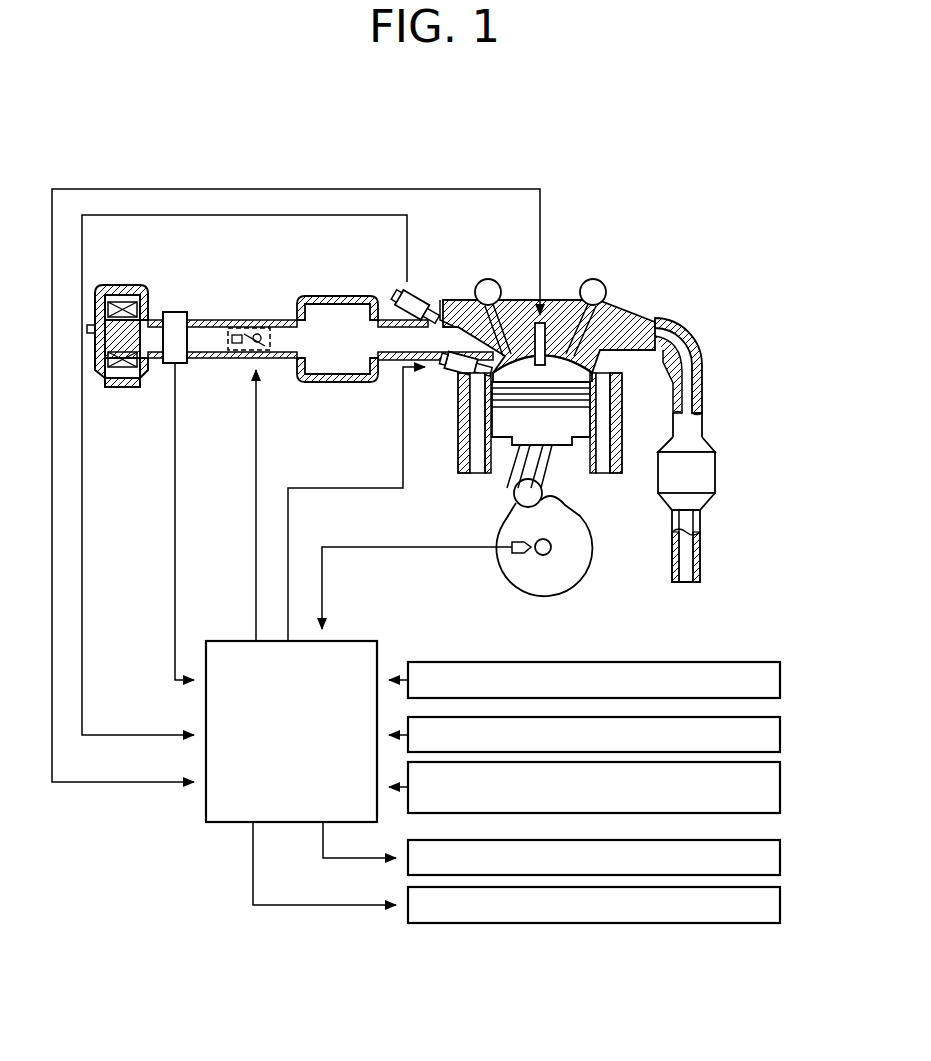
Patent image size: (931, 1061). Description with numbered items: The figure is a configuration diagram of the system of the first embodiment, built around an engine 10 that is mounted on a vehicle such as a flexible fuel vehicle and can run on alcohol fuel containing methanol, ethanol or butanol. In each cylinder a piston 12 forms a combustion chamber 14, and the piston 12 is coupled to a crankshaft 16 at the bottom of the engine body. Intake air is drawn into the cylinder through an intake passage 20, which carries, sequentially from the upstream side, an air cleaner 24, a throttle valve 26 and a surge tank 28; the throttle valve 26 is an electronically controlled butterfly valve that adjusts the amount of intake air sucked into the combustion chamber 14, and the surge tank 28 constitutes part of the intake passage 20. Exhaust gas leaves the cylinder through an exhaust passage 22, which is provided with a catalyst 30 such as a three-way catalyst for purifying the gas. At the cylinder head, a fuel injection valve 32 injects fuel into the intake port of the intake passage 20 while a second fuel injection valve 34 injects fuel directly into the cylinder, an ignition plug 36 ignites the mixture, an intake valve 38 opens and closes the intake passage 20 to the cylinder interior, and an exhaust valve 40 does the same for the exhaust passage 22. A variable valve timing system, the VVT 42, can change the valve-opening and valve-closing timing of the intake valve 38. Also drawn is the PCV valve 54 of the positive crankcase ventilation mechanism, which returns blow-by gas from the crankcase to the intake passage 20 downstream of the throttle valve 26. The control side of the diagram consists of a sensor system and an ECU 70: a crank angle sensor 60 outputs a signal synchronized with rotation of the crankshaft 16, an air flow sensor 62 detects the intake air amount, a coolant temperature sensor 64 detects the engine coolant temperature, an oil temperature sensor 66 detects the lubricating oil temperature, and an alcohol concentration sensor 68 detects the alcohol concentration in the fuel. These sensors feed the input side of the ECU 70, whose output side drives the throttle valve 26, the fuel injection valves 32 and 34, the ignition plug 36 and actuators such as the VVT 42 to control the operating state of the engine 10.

The engine 10 is at (688, 302).
The piston 12 is at (497, 433).
The combustion chamber 14 is at (573, 368).
The crankshaft 16 is at (551, 550).
The intake passage 20 is at (222, 358).
The exhaust passage 22 is at (698, 356).
The air cleaner 24 is at (117, 285).
The throttle valve 26 is at (250, 334).
The surge tank 28 is at (336, 296).
The catalyst 30 is at (708, 472).
The fuel injection valve 32 is at (420, 300).
The fuel injection valve 34 is at (448, 374).
The ignition plug 36 is at (548, 318).
The intake valve 38 is at (502, 320).
The exhaust valve 40 is at (608, 316).
The variable valve timing system (VVT) 42 is at (782, 859).
The PCV valve 54 is at (782, 906).
The crank angle sensor 60 is at (511, 553).
The air flow sensor 62 is at (178, 316).
The coolant temperature sensor 64 is at (782, 681).
The oil temperature sensor 66 is at (782, 736).
The alcohol concentration sensor 68 is at (782, 790).
The engine control unit (ECU) 70 is at (222, 823).